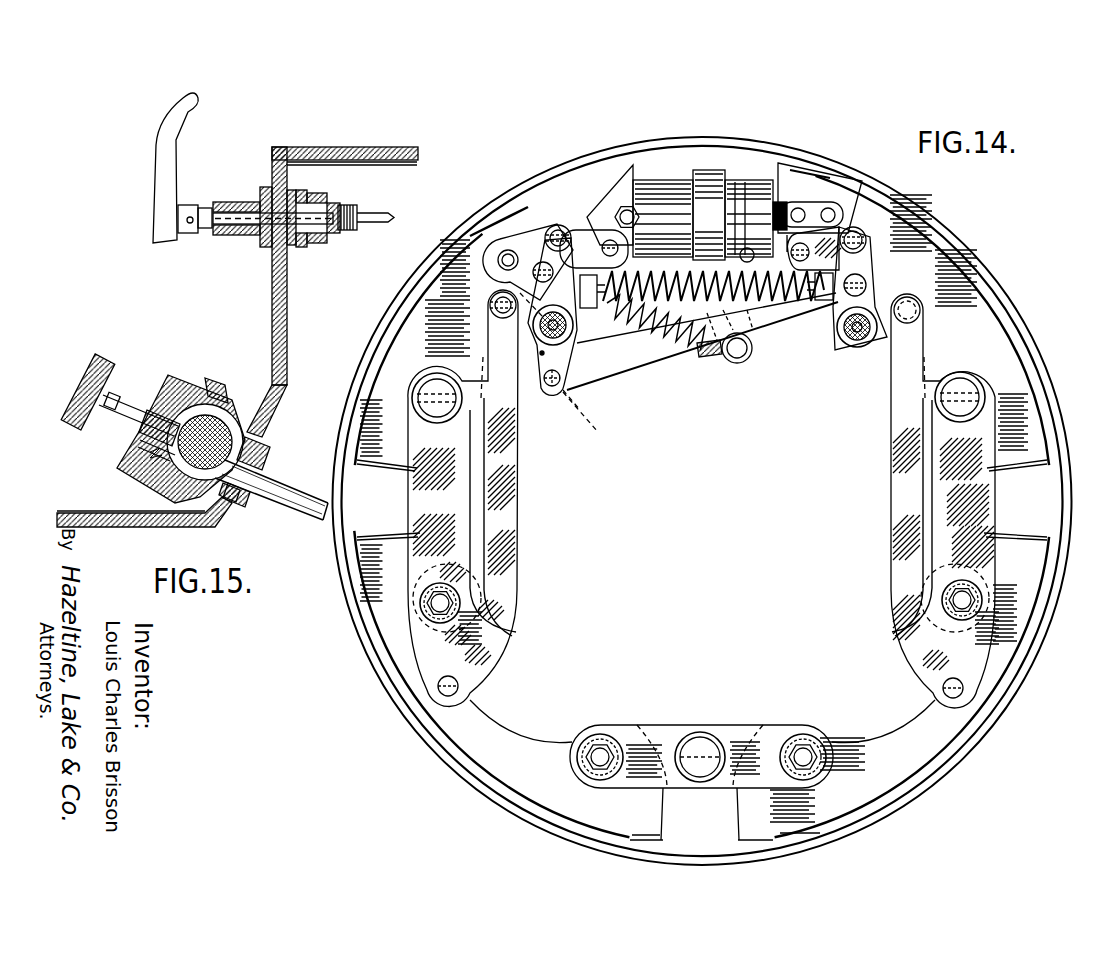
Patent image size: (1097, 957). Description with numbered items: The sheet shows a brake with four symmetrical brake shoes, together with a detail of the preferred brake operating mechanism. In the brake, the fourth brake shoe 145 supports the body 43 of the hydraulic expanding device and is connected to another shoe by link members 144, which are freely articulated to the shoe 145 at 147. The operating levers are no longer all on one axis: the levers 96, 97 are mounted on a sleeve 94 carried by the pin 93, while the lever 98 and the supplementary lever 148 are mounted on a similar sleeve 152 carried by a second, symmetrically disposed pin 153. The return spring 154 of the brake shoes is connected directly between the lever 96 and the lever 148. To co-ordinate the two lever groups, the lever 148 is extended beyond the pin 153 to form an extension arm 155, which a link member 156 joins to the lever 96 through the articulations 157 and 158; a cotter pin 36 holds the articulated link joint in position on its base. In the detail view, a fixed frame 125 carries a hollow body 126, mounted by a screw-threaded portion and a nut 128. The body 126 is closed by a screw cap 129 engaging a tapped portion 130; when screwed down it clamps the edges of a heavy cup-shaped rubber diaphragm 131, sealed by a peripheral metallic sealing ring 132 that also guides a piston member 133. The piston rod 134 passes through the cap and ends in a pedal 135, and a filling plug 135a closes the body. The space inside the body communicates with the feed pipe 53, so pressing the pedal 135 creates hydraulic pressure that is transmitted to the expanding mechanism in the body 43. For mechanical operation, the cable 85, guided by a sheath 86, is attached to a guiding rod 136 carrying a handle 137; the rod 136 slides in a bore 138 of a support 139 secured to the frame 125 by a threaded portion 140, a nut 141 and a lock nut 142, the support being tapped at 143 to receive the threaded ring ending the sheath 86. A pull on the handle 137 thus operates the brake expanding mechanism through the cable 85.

In FIG. 14, the body of the hydraulic expanding device 43 is at (672, 200).
In FIG. 14, the supplementary lever 148 is at (540, 268).
In FIG. 14, the sleeve 152 is at (530, 337).
In FIG. 14, the lever 98 is at (535, 340).
In FIG. 14, the fourth brake shoe 145 is at (458, 353).
In FIG. 14, the free articulation 147 is at (433, 412).
In FIG. 14, the link members 144 is at (450, 507).
In FIG. 14, the extension arm 155 is at (542, 355).
In FIG. 14, the articulation 157 is at (593, 421).
In FIG. 14, the second pin 153 is at (575, 330).
In FIG. 14, the link member 156 is at (625, 358).
In FIG. 14, the return spring 154 is at (787, 301).
In FIG. 14, the articulation 158 is at (873, 300).
In FIG. 14, the lever 96 is at (878, 312).
In FIG. 14, the lever 97 is at (886, 338).
In FIG. 14, the sleeve 94 is at (838, 337).
In FIG. 14, the pin 93 is at (855, 345).
In FIG. 14, the cotter pin 36 is at (693, 752).
In FIG. 15, the fixed frame 125 is at (283, 293).
In FIG. 15, the body 126 is at (232, 400).
In FIG. 15, the nut 128 is at (260, 447).
In FIG. 15, the screw cap 129 is at (137, 447).
In FIG. 15, the tapped portion 130 is at (183, 392).
In FIG. 15, the cup-shaped rubber diaphragm 131 is at (157, 482).
In FIG. 15, the peripheral metallic sealing ring 132 is at (150, 458).
In FIG. 15, the piston member 133 is at (188, 463).
In FIG. 15, the piston rod 134 is at (120, 400).
In FIG. 15, the pedal 135 is at (107, 350).
In FIG. 15, the stud 135a is at (213, 378).
In FIG. 15, the guiding rod 136 is at (248, 217).
In FIG. 15, the handle 137 is at (188, 237).
In FIG. 15, the bore 138 is at (222, 203).
In FIG. 15, the support 139 is at (240, 203).
In FIG. 15, the threaded portion 140 is at (335, 203).
In FIG. 15, the nut 141 is at (300, 193).
In FIG. 15, the lock nut 142 is at (320, 192).
In FIG. 15, the tapped portion 143 is at (272, 190).
In FIG. 15, the sheath 86 is at (345, 207).
In FIG. 15, the cable 85 is at (370, 212).
In FIG. 15, the feed pipe 53 is at (280, 487).